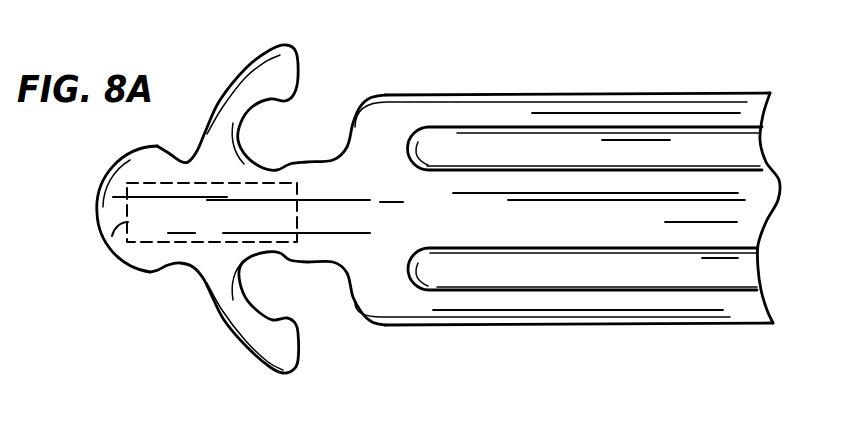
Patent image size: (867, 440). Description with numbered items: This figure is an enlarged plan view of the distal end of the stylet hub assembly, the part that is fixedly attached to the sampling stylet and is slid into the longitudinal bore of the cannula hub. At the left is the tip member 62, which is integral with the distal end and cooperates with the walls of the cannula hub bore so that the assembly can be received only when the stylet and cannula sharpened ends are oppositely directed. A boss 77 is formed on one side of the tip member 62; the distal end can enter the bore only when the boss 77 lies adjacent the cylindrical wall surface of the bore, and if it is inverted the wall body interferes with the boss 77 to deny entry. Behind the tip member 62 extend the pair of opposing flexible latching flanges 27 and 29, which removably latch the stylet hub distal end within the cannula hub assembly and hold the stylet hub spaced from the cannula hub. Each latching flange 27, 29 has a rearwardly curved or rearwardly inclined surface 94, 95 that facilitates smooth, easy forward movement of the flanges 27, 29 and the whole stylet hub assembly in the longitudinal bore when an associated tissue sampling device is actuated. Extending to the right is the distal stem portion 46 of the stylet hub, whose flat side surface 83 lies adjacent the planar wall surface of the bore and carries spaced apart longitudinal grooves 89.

The distal stem portion 46 is at (588, 108).
The longitudinal grooves 89 is at (748, 147).
The flat side surface 83 is at (447, 233).
The latching flange 29 is at (283, 81).
The rearwardly curved surface 95 is at (240, 78).
The latching flange 27 is at (288, 373).
The rearwardly curved surface 94 is at (237, 340).
The tip member 62 is at (153, 260).
The boss 77 is at (110, 237).